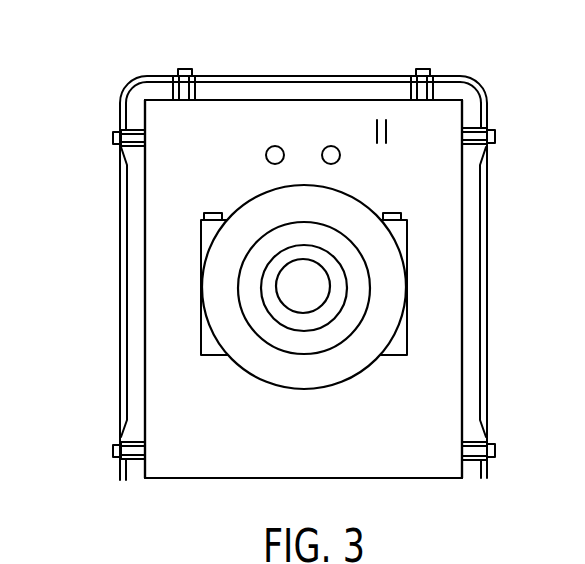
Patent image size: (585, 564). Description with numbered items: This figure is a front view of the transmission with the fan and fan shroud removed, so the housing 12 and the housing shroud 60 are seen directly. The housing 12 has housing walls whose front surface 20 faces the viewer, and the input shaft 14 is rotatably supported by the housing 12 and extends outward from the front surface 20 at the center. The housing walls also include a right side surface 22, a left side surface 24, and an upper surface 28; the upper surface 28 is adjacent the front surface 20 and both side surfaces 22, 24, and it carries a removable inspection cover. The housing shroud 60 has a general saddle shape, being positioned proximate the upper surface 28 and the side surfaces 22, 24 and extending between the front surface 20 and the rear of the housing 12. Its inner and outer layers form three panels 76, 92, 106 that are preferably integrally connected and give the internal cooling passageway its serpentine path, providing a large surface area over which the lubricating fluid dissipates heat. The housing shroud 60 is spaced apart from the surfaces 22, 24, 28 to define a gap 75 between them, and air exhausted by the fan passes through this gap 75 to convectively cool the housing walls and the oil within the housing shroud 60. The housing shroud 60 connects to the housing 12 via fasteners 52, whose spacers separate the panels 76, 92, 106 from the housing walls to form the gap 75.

The housing 12 is at (472, 235).
The input shaft 14 is at (313, 313).
The front surface 20 is at (265, 441).
The right side surface 22 is at (463, 388).
The left side surface 24 is at (145, 388).
The upper surface 28 is at (316, 100).
The fasteners 52 is at (182, 69).
The housing shroud 60 is at (486, 80).
The gap 75 is at (470, 198).
The panel 76 is at (488, 287).
The panel 92 is at (364, 75).
The panel 106 is at (118, 282).